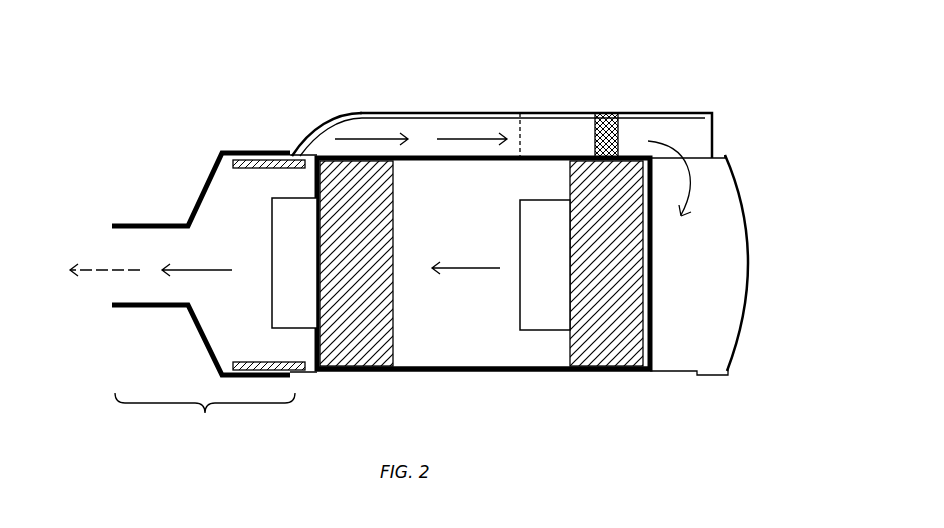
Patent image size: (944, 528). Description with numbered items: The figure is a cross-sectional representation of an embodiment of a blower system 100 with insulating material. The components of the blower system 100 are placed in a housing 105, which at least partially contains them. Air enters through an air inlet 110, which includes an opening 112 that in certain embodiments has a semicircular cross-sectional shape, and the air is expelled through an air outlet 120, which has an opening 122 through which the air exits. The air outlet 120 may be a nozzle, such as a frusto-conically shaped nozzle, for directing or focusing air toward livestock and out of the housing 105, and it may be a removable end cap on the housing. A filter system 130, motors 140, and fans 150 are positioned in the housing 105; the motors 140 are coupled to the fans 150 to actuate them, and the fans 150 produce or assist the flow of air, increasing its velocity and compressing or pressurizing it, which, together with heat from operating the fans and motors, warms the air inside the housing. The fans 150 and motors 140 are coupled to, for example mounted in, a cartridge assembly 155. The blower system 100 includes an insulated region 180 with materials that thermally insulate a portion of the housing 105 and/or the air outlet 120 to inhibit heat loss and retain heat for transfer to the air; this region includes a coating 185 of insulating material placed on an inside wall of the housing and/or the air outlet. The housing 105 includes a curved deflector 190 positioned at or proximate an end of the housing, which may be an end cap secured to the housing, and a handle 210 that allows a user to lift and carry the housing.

The blower system 100 is at (700, 80).
The housing 105 is at (663, 372).
The air inlet 110 is at (530, 110).
The opening 112 is at (522, 140).
The air outlet 120 is at (197, 332).
The opening 122 is at (120, 252).
The filter system 130 is at (612, 110).
The motor 140 is at (272, 303).
The fan 150 is at (481, 263).
The cartridge assembly 155 is at (652, 298).
The insulated region 180 is at (205, 421).
The coating 185 is at (268, 172).
The deflector 190 is at (743, 302).
The handle 210 is at (392, 113).